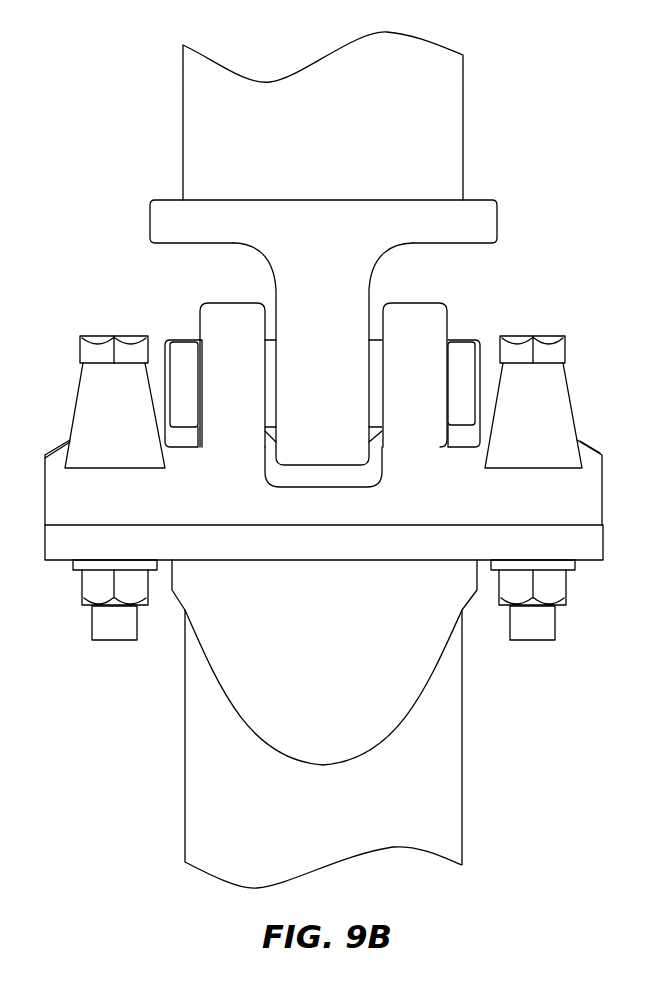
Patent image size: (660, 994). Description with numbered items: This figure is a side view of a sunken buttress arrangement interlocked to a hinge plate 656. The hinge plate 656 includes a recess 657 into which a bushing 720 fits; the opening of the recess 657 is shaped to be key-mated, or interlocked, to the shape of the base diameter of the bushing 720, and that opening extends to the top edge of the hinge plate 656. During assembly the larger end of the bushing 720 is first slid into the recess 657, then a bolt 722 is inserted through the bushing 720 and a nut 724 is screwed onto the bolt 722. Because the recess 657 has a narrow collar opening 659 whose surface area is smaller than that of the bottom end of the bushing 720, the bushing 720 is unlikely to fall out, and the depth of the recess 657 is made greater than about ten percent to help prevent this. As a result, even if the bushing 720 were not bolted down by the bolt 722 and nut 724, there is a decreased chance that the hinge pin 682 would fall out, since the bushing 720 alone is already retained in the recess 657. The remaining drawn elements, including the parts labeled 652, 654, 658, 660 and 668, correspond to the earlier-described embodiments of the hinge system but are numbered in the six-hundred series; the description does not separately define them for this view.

The lower post / saddle 652 is at (232, 478).
The flange 654 is at (482, 215).
The hinge plate 656 is at (468, 504).
The recess 657 is at (575, 466).
The clamp jaws 658 is at (232, 348).
The narrow collar opening 659 is at (63, 432).
The base plate 660 is at (430, 555).
The stem 668 is at (325, 328).
The hinge pin 682 is at (465, 345).
The bushing 720 is at (85, 393).
The bolt 722 is at (557, 350).
The nut 724 is at (553, 588).